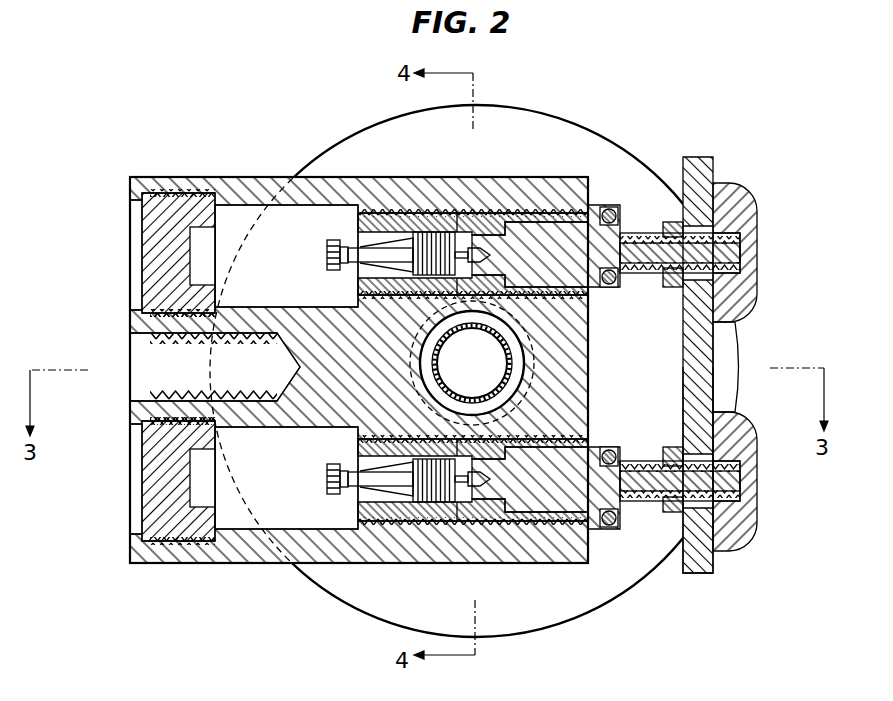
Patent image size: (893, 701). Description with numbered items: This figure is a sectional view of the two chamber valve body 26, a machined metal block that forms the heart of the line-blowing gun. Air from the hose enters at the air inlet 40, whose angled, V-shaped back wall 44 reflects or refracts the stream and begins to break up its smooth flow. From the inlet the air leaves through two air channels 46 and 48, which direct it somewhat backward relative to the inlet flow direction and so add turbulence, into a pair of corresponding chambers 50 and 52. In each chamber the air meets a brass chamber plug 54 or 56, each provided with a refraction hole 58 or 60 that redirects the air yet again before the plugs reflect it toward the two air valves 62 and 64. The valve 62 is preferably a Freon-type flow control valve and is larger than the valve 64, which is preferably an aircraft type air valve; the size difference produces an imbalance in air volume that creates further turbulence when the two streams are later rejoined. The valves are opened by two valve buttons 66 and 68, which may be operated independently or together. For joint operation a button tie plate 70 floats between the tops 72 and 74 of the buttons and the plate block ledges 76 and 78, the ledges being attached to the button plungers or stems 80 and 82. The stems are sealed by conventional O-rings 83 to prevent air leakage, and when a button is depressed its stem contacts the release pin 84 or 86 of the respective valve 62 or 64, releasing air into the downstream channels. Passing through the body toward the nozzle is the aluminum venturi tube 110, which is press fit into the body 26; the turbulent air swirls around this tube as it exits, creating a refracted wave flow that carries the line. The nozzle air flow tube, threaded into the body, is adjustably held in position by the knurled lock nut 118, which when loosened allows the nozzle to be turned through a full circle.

The valve body 26 is at (224, 177).
The air inlet 40 is at (143, 368).
The back wall 44 is at (298, 368).
The air channel 46 is at (252, 318).
The air channel 48 is at (253, 415).
The chamber 50 is at (331, 218).
The chamber 52 is at (287, 518).
The chamber plug 54 is at (141, 242).
The chamber plug 56 is at (141, 483).
The refraction hole 58 is at (203, 240).
The refraction hole 60 is at (205, 503).
The air valve 62 is at (384, 180).
The air valve 64 is at (333, 498).
The valve button 66 is at (752, 202).
The valve button 68 is at (757, 545).
The button tie plate 70 is at (718, 362).
The button top 72 is at (716, 180).
The button top 74 is at (733, 550).
The plate block ledge 76 is at (668, 223).
The plate block ledge 78 is at (662, 507).
The button stem 80 is at (637, 282).
The button stem 82 is at (635, 455).
The O-rings 83 is at (604, 205).
The release pin 84 is at (462, 243).
The release pin 86 is at (463, 490).
The venturi tube 110 is at (473, 398).
The lock nut 118 is at (572, 612).